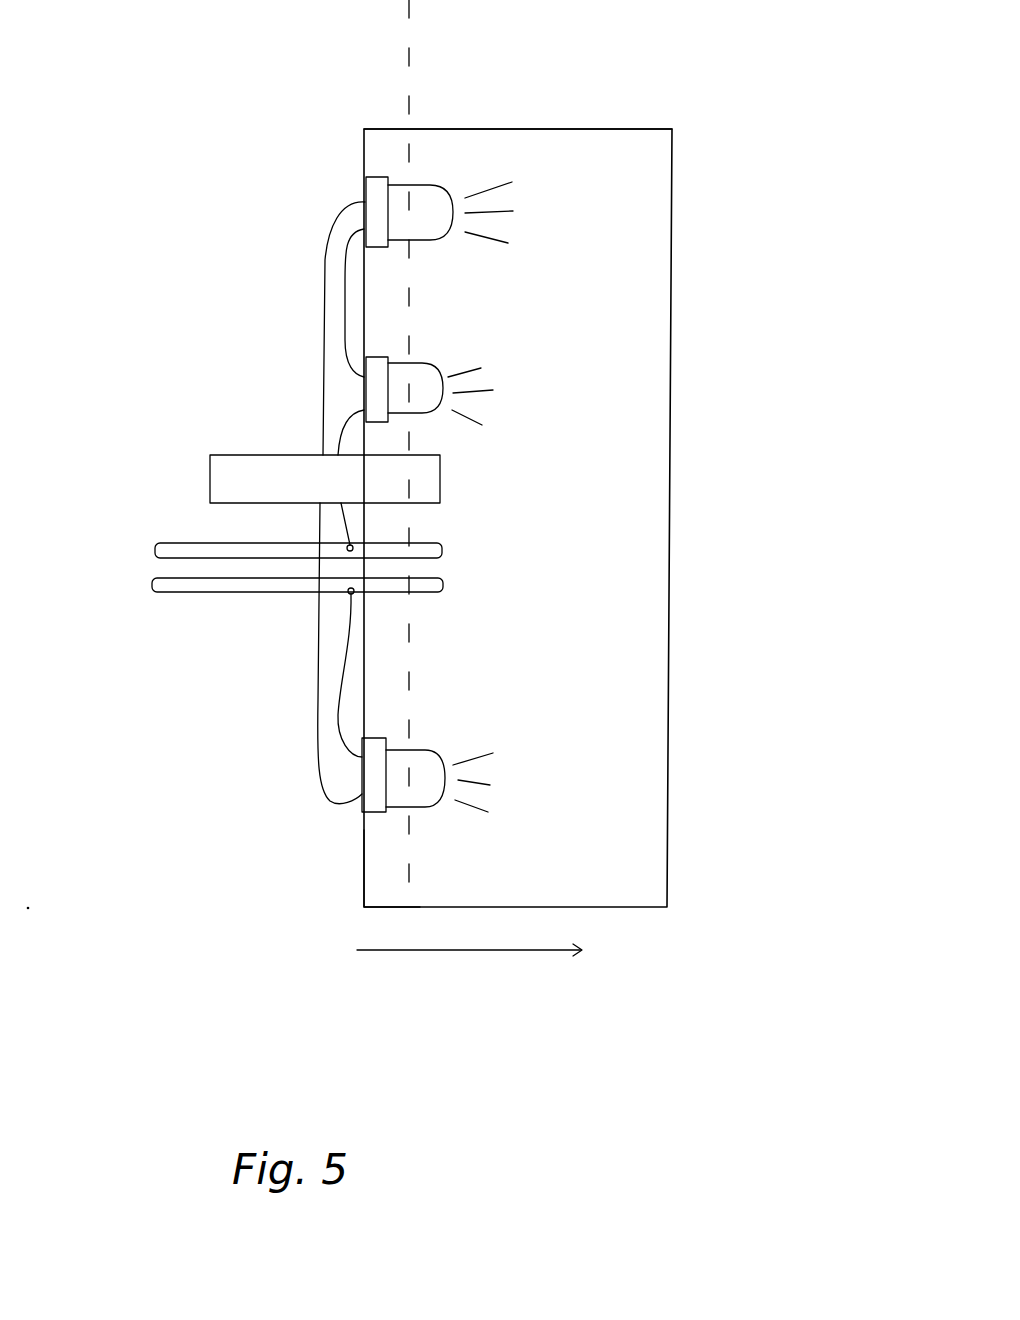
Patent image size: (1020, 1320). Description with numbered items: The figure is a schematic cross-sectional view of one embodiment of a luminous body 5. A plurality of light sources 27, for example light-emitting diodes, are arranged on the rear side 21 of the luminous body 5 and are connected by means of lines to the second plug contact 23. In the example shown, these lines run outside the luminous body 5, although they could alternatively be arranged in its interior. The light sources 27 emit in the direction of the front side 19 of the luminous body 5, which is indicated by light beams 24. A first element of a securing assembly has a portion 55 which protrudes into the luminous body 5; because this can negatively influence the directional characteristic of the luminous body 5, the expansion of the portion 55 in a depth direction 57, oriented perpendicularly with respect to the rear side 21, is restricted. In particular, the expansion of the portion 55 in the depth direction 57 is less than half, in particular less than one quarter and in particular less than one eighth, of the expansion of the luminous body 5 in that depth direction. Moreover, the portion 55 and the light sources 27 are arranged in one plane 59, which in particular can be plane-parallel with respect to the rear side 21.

The luminous body 5 is at (603, 126).
The front side 19 is at (672, 226).
The rear side 21 is at (358, 853).
The second plug contact 23 is at (129, 562).
The light beams 24 is at (497, 184).
The light sources 27 is at (417, 186).
The portion 55 is at (440, 478).
The depth direction 57 is at (443, 951).
The plane 59 is at (411, 56).